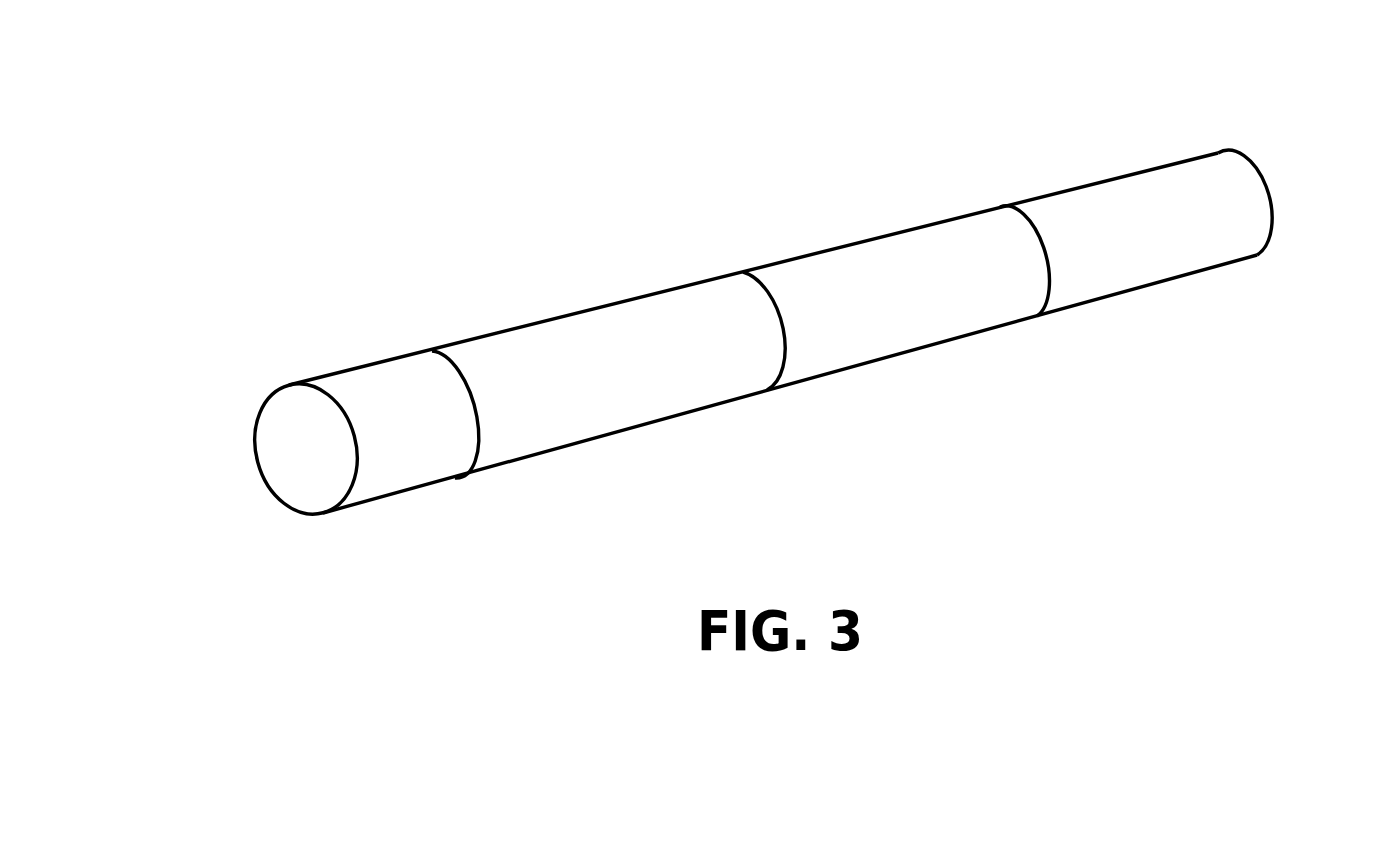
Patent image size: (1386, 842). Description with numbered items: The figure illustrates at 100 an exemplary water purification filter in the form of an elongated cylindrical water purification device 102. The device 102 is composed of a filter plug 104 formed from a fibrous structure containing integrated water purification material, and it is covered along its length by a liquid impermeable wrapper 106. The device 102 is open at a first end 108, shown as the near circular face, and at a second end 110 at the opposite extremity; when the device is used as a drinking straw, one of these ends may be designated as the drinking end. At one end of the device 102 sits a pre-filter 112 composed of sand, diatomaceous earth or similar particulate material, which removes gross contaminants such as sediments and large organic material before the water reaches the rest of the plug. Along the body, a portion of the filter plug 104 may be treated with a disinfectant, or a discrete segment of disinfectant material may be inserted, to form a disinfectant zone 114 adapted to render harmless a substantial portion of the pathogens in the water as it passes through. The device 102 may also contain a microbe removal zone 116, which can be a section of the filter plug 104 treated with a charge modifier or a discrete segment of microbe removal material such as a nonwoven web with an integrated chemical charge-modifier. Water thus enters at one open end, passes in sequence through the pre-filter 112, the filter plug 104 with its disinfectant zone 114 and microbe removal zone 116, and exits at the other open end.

The illustration of water purification device 100 is at (747, 138).
The water purification device 102 is at (1253, 168).
The filter plug 104 is at (648, 377).
The liquid impermeable wrapper 106 is at (363, 365).
The first end 108 is at (282, 440).
The second end 110 is at (1270, 205).
The pre-filter 112 is at (434, 434).
The disinfectant zone 114 is at (595, 438).
The microbe removal zone 116 is at (922, 350).